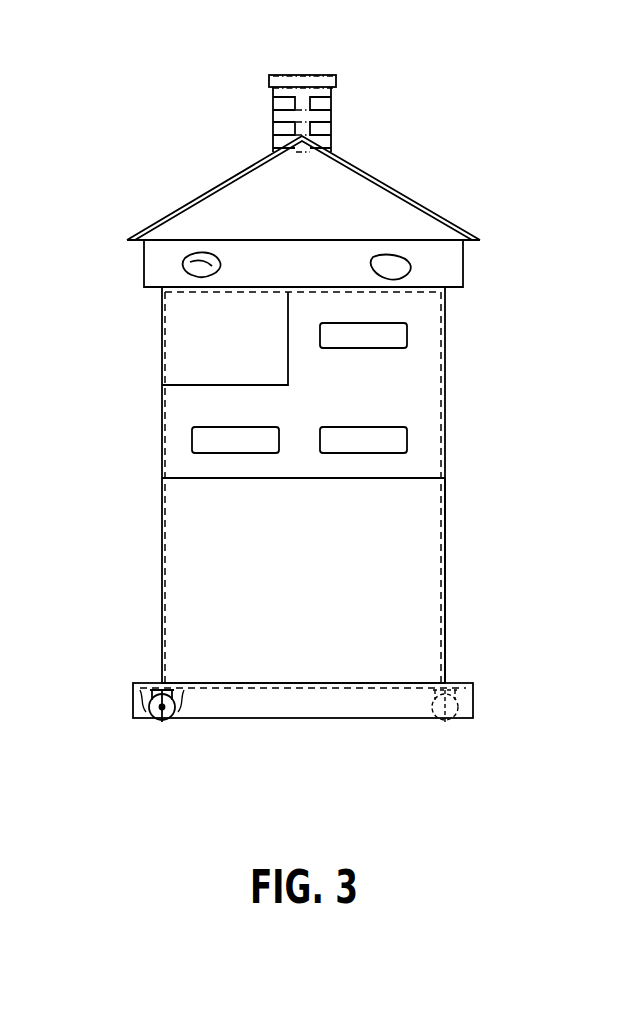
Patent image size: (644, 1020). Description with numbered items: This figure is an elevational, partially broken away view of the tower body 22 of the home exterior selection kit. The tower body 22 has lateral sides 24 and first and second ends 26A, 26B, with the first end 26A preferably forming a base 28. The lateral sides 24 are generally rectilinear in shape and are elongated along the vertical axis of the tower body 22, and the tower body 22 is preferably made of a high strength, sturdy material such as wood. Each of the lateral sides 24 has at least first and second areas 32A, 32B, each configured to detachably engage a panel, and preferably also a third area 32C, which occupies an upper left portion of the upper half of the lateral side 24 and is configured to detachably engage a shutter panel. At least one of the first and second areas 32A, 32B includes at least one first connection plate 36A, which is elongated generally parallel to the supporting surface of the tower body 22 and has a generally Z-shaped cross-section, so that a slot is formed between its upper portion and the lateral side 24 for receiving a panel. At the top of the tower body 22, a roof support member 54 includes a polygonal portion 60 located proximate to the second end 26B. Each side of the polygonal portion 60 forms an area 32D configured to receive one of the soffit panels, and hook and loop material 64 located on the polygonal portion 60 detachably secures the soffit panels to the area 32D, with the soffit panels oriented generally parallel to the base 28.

The tower body 22 is at (445, 365).
The lateral sides 24 is at (385, 513).
The first end 26A is at (327, 688).
The second end 26B is at (428, 253).
The base 28 is at (466, 670).
The first area 32A is at (320, 612).
The second area 32B is at (408, 403).
The third area 32C is at (248, 357).
The area 32D is at (303, 270).
The first connection plate 36A is at (348, 338).
The roof support member 54 is at (310, 168).
The polygonal portion 60 is at (438, 266).
The hook and loop material 64 is at (197, 262).